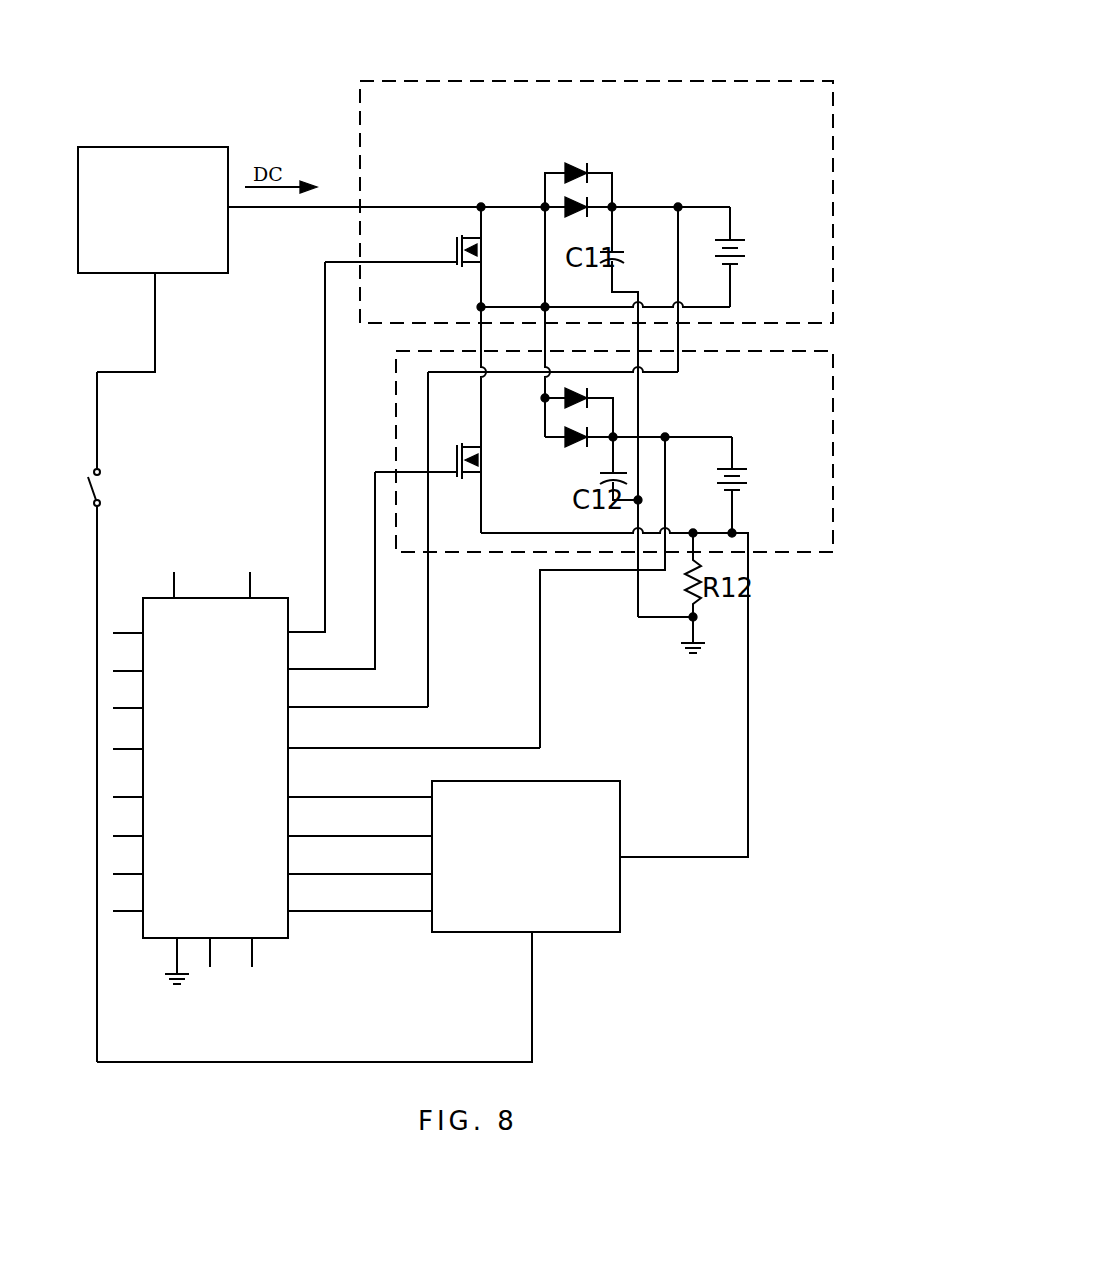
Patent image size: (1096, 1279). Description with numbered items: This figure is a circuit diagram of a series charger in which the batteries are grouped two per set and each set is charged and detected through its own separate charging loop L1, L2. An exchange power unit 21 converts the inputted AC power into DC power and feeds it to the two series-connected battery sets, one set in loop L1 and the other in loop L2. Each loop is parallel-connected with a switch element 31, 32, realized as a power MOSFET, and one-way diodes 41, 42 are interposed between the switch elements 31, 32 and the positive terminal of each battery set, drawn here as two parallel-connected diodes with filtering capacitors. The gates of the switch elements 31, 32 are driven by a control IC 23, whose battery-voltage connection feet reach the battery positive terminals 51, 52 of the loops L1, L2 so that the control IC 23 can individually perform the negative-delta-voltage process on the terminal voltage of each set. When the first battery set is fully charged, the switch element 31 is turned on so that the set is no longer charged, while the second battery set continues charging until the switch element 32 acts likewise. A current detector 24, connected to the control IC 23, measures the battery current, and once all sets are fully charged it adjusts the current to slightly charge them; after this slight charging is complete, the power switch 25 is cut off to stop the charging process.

The exchange power unit 21 is at (175, 152).
The control IC 23 is at (192, 617).
The current detector 24 is at (612, 805).
The power switch 25 is at (103, 488).
The switch element 31 is at (453, 250).
The switch element 32 is at (455, 458).
The one-way diode 41 is at (592, 165).
The one-way diode 42 is at (578, 452).
The battery positive terminal 51 is at (687, 203).
The battery positive terminal 52 is at (672, 430).
The separate charging loop L1 is at (740, 80).
The separate charging loop L2 is at (765, 553).